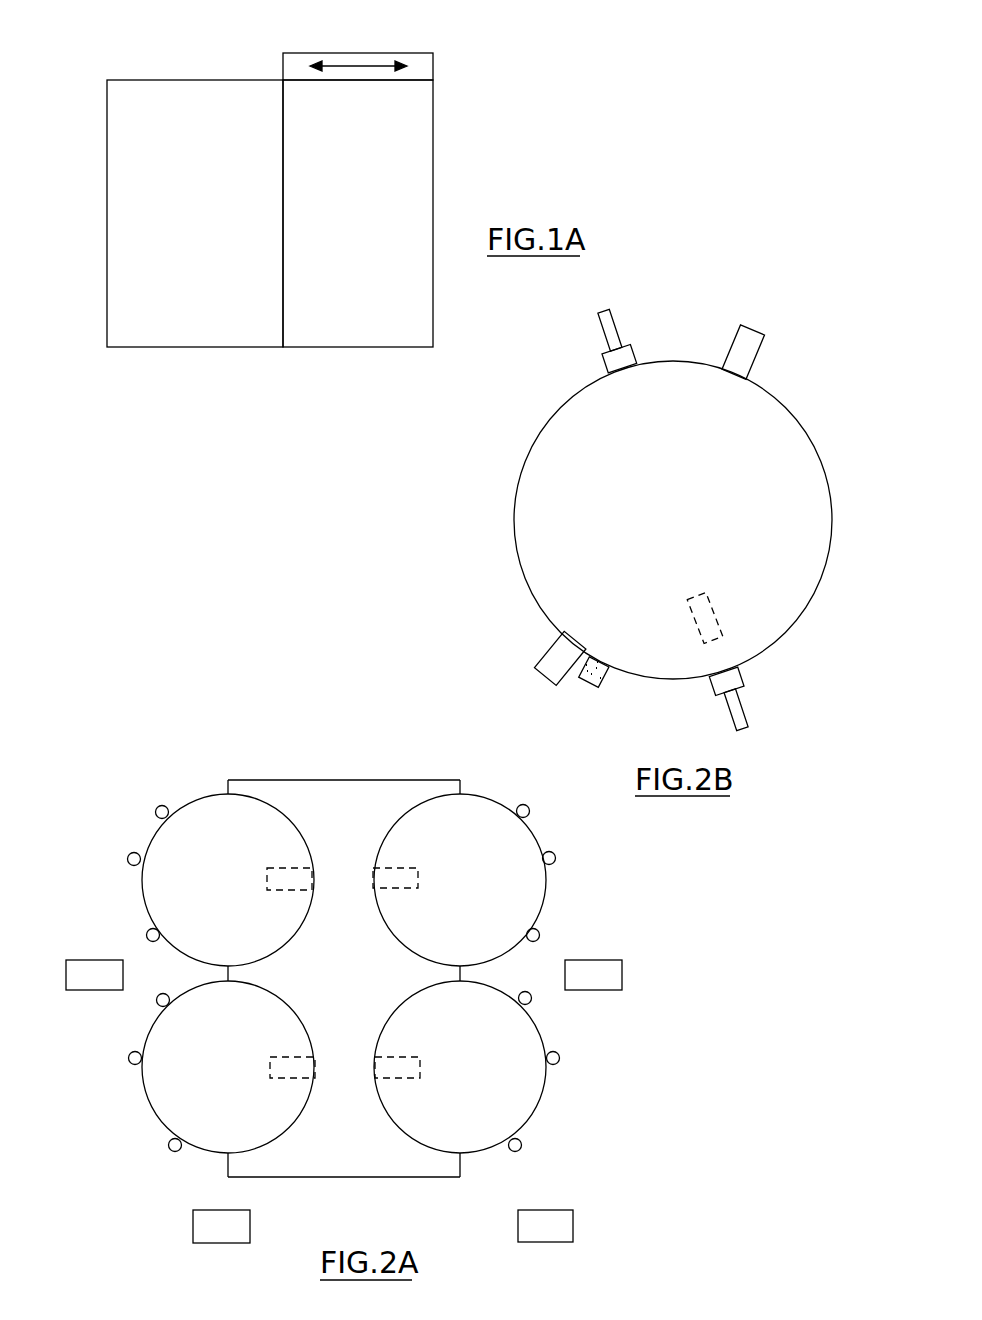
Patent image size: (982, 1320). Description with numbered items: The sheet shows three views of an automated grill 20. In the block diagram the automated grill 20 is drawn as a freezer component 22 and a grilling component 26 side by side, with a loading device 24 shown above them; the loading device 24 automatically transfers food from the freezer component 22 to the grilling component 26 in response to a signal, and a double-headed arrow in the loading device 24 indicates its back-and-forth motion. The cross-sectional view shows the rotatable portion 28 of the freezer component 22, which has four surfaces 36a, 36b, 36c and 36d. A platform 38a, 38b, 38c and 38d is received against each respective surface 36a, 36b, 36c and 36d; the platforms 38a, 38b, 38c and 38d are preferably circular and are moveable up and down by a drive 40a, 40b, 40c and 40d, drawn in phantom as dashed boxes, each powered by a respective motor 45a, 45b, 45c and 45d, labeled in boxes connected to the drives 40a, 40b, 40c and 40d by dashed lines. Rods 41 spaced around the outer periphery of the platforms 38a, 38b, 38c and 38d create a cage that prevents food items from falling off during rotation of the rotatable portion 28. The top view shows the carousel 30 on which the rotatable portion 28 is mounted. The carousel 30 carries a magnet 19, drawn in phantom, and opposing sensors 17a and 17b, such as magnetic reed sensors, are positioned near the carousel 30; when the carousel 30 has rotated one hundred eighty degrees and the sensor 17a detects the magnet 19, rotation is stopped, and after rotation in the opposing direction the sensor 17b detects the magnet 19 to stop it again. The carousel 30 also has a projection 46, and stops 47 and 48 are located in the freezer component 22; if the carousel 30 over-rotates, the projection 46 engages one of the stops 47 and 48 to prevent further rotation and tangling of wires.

In FIG. 1A, the automated grill 20 is at (497, 94).
In FIG. 1A, the freezer component 22 is at (433, 160).
In FIG. 1A, the loading device 24 is at (337, 52).
In FIG. 1A, the grilling component 26 is at (107, 155).
In FIG. 2B, the carousel 30 is at (813, 533).
In FIG. 2B, the sensor 17a is at (742, 722).
In FIG. 2B, the sensor 17b is at (610, 327).
In FIG. 2B, the stop 47 is at (748, 347).
In FIG. 2B, the stop 48 is at (545, 668).
In FIG. 2B, the projection 46 is at (590, 684).
In FIG. 2B, the magnet 19 is at (720, 634).
In FIG. 2A, the rotatable portion 28 is at (383, 1155).
In FIG. 2A, the surface 36a is at (283, 812).
In FIG. 2A, the surface 36b is at (270, 990).
In FIG. 2A, the surface 36c is at (398, 812).
In FIG. 2A, the surface 36d is at (408, 998).
In FIG. 2A, the platform 38a is at (170, 880).
In FIG. 2A, the platform 38b is at (177, 1078).
In FIG. 2A, the platform 38c is at (512, 848).
In FIG. 2A, the platform 38d is at (513, 1077).
In FIG. 2A, the drive 40a is at (290, 868).
In FIG. 2A, the drive 40b is at (290, 1057).
In FIG. 2A, the drive 40c is at (393, 875).
In FIG. 2A, the drive 40d is at (395, 1070).
In FIG. 2A, the rods 41 is at (155, 806).
In FIG. 2A, the motor 45a is at (290, 877).
In FIG. 2A, the motor 45b is at (295, 1065).
In FIG. 2A, the motor 45c is at (418, 883).
In FIG. 2A, the motor 45d is at (412, 1077).